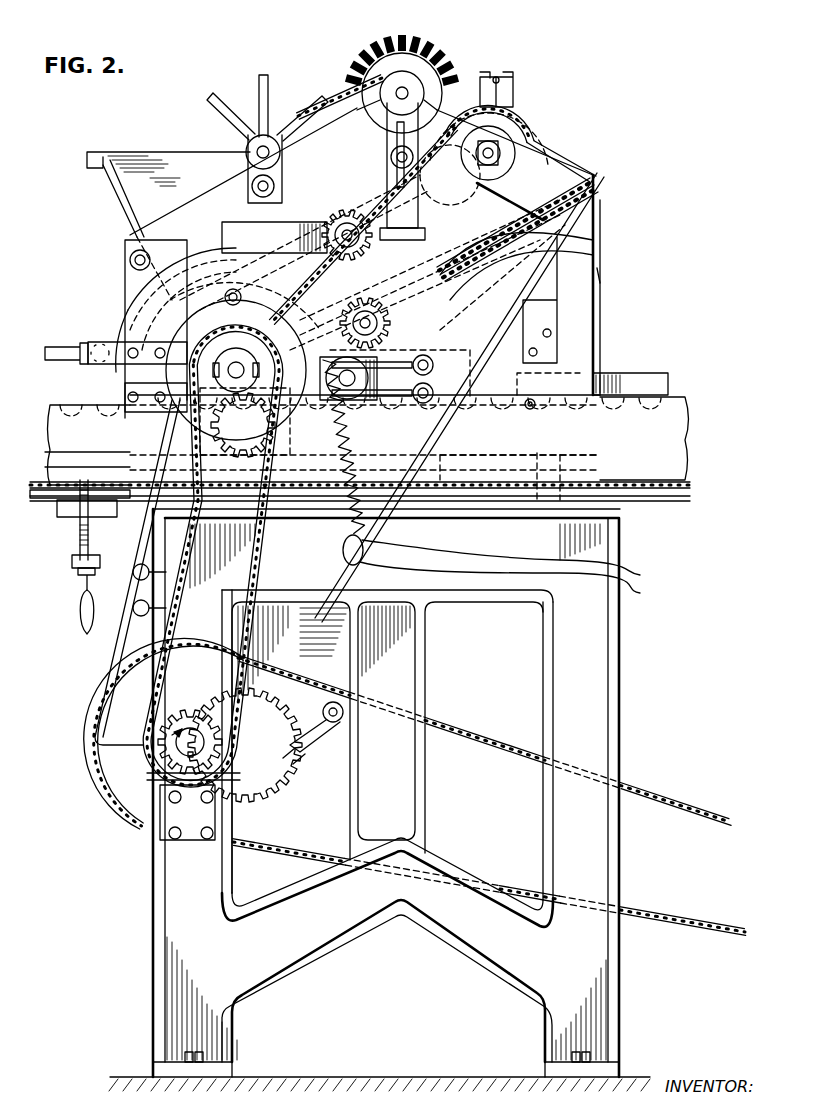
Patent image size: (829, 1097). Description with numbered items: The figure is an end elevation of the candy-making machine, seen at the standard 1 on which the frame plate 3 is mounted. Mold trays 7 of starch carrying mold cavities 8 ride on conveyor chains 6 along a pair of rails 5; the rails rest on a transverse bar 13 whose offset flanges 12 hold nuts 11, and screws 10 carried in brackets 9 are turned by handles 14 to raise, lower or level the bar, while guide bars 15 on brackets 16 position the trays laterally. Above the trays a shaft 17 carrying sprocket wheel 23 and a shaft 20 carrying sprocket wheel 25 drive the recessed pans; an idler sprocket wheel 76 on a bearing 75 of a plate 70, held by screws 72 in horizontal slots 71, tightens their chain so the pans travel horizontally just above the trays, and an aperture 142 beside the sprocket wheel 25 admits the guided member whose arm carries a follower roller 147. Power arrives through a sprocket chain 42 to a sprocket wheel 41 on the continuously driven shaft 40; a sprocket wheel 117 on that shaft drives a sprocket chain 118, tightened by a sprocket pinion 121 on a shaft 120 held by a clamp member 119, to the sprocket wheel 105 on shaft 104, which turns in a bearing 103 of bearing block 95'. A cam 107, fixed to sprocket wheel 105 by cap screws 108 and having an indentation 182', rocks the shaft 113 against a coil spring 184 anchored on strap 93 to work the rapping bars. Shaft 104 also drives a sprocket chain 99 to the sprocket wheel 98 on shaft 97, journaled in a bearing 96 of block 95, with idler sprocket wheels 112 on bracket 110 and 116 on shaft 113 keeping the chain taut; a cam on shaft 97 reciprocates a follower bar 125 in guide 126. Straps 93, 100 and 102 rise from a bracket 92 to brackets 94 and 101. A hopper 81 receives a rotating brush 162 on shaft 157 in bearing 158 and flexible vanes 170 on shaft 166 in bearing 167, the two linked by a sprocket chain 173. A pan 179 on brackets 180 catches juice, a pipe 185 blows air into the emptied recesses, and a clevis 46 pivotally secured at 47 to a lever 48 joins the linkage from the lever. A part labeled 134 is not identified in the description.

The standard 1 is at (625, 625).
The frame plate 3 is at (595, 270).
The longitudinal rails 5 is at (640, 500).
The conveyor chains 6 is at (660, 501).
The mold tray 7 is at (668, 448).
The mold cavities 8 is at (690, 417).
The brackets 9 is at (103, 650).
The screws 10 is at (76, 572).
The nuts 11 is at (72, 552).
The offset flanges 12 is at (95, 520).
The transverse bar 13 is at (58, 518).
The handles 14 is at (78, 598).
The guide bars 15 is at (500, 455).
The brackets 16 is at (540, 455).
The shaft 17 is at (560, 225).
The shaft 20 is at (125, 398).
The sprocket wheel 23 is at (387, 236).
The sprocket wheel 25 is at (150, 242).
The shaft 40 is at (176, 742).
The sprocket wheel 41 is at (145, 795).
The sprocket chain 42 is at (662, 792).
The clevis 46 is at (308, 735).
The pivot 47 is at (333, 725).
The lever 48 is at (327, 760).
The plate 70 is at (560, 303).
The slots 71 is at (422, 403).
The screws 72 is at (560, 335).
The bearing 75 is at (345, 366).
The idler sprocket wheel 76 is at (405, 390).
The hopper 81 is at (140, 185).
The bracket 92 is at (165, 830).
The strap 93 is at (488, 397).
The bracket 94 is at (565, 260).
The block 95 is at (542, 159).
The bearing block 95' is at (243, 361).
The bearing 96 is at (545, 165).
The shaft 97 is at (550, 148).
The sprocket wheel 98 is at (545, 135).
The sprocket chain 99 is at (360, 235).
The strap 100 is at (114, 655).
The bracket 101 is at (110, 345).
The strap 102 is at (560, 245).
The bearing 103 is at (160, 305).
The shaft 104 is at (165, 290).
The sprocket wheel 105 is at (182, 420).
The cam 107 is at (150, 330).
The cap screws 108 is at (147, 383).
The bracket 110 is at (150, 210).
The idler sprocket wheel 112 is at (323, 133).
The shaft 113 is at (360, 310).
The idler sprocket wheel 116 is at (600, 283).
The sprocket wheel 117 is at (125, 780).
The sprocket chain 118 is at (156, 685).
The clamp member 119 is at (55, 465).
The shaft 120 is at (110, 478).
The sprocket pinion 121 is at (60, 450).
The follower bar 125 is at (545, 105).
The guide 126 is at (488, 77).
The chain guide 134 is at (545, 118).
The aperture 142 is at (278, 440).
The follower roller 147 is at (280, 462).
The shaft 157 is at (403, 85).
The bearing 158 is at (397, 45).
The rotating brush 162 is at (465, 65).
The shaft 166 is at (243, 133).
The bearing 167 is at (246, 150).
The tubular vanes 170 is at (262, 75).
The sprocket chain 173 is at (258, 98).
The pan 179 is at (630, 373).
The brackets 180 is at (570, 380).
The indentation 182' is at (264, 286).
The coil spring 184 is at (515, 581).
The pipe 185 is at (100, 343).